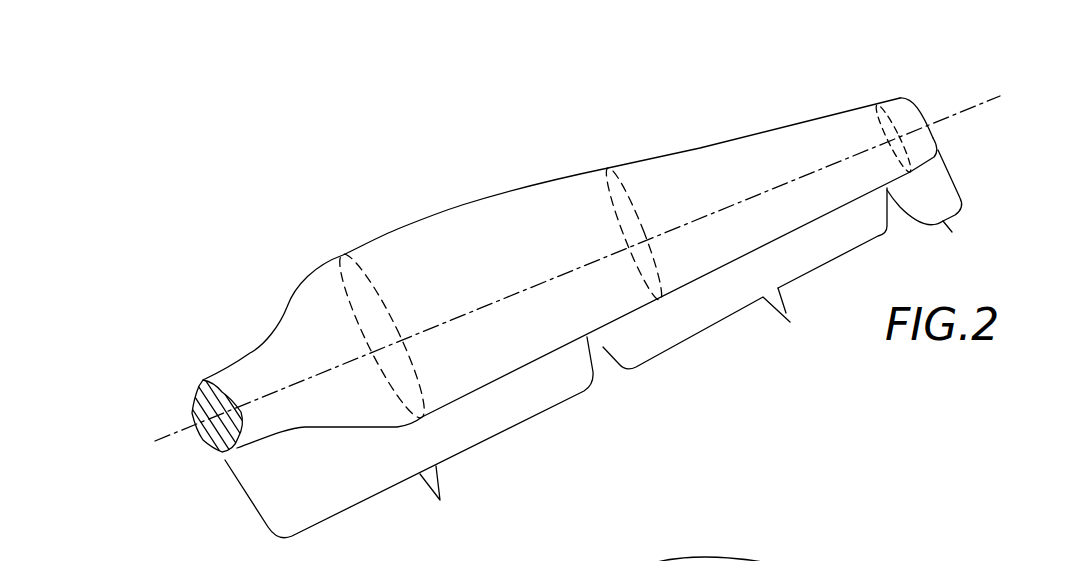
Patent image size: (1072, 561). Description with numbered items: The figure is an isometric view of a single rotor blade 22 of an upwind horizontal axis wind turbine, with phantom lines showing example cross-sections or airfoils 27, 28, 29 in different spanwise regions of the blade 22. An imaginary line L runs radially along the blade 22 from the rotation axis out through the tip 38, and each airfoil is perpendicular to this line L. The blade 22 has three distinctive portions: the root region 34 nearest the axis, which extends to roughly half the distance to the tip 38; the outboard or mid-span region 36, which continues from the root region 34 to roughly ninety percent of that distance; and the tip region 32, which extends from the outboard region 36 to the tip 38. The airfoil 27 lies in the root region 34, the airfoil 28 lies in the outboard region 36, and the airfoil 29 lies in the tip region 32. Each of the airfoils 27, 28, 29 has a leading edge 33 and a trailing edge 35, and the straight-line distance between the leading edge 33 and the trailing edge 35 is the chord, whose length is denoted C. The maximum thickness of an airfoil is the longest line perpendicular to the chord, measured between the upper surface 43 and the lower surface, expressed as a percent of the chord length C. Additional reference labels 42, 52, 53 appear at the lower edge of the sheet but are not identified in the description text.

The tapered tubular body 22 is at (462, 205).
The first cross-section plane 27 is at (358, 240).
The second cross-section plane 28 is at (641, 150).
The end portion 29 is at (927, 110).
The longitudinal axis L is at (963, 110).
The end flap 32 is at (953, 231).
The lower intersection point 33 is at (408, 426).
The first flap 34 is at (440, 500).
The upper intersection point 35 is at (342, 255).
The second flap 36 is at (790, 322).
The end edge 38 is at (938, 140).
The element 42 is at (595, 560).
The element 43 is at (528, 560).
The element 52 is at (767, 560).
The element 53 is at (932, 560).
The center C is at (718, 560).